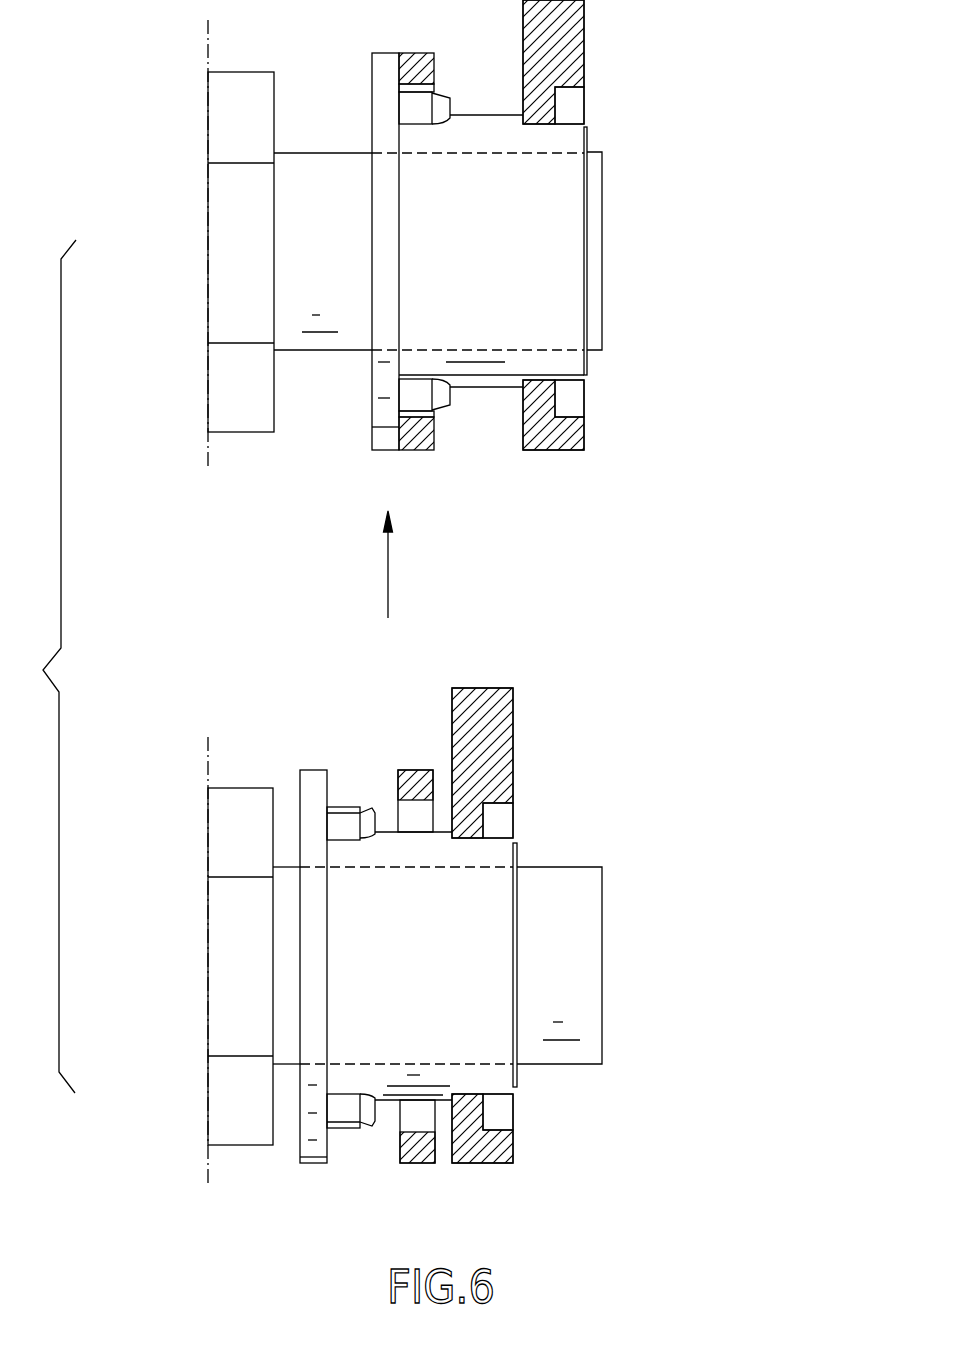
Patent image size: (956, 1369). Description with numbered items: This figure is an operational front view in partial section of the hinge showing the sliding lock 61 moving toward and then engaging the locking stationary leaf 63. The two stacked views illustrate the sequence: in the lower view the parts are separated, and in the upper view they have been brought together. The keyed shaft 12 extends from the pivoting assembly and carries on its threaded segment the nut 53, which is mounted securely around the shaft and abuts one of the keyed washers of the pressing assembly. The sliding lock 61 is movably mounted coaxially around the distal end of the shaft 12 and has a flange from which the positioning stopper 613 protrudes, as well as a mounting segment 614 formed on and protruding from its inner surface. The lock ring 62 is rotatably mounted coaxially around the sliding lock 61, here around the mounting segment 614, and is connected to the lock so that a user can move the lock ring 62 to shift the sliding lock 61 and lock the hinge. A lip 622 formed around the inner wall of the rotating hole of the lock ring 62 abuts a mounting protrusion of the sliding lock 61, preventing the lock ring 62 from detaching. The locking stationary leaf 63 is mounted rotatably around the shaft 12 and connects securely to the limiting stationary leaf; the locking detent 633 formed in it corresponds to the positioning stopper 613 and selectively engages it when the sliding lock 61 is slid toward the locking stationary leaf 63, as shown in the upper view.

The shaft 12 is at (593, 310).
The nut 53 is at (263, 85).
The sliding lock 61 is at (388, 58).
The positioning stopper 613 is at (426, 108).
The mounting segment 614 is at (577, 262).
The lock ring 62 is at (568, 428).
The lip 622 is at (552, 106).
The locking stationary leaf 63 is at (420, 440).
The locking detent 633 is at (422, 815).